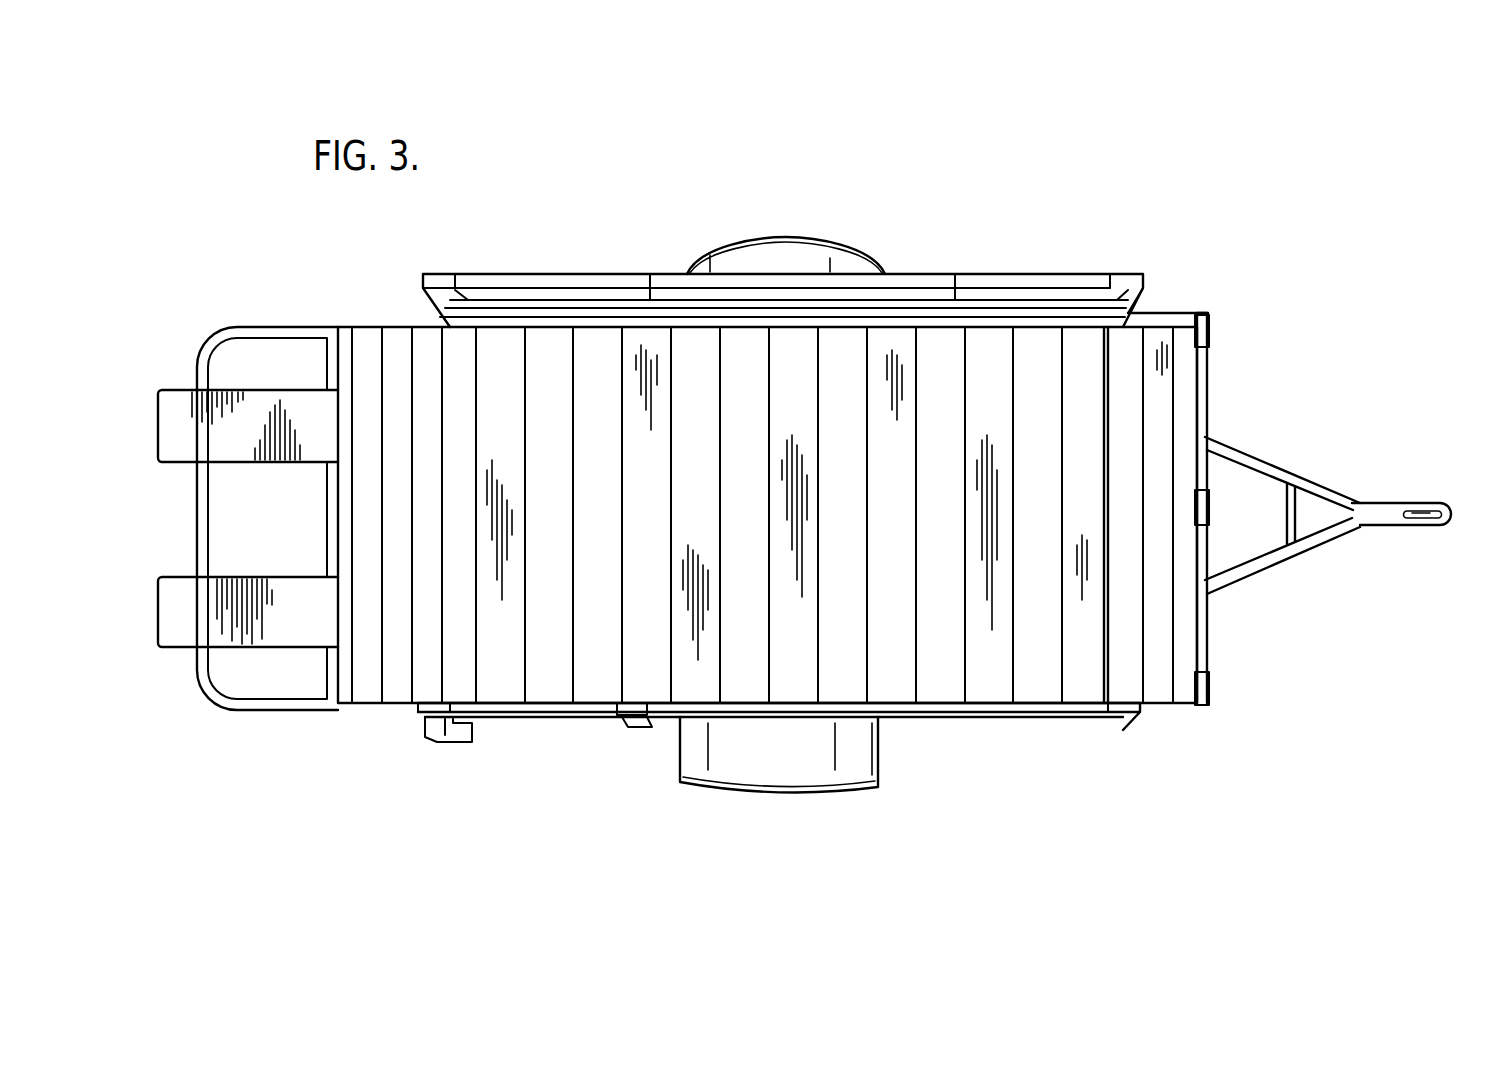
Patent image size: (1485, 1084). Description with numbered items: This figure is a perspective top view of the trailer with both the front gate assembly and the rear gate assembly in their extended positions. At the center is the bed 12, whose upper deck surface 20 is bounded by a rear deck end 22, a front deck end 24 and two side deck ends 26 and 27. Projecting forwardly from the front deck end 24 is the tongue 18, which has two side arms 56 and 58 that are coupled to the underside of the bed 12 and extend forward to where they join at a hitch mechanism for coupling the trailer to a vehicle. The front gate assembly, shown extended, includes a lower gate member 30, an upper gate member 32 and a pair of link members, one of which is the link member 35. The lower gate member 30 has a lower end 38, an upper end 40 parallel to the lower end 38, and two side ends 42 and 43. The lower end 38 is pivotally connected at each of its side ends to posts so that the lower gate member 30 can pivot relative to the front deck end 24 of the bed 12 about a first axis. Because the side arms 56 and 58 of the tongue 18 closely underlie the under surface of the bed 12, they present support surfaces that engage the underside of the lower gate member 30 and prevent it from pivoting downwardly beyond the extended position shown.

The bed 12 is at (598, 377).
The tongue 18 is at (1328, 533).
The upper deck surface 20 is at (661, 491).
The rear deck end 22 is at (483, 446).
The front deck end 24 is at (1103, 399).
The side deck end 26 is at (737, 700).
The side deck end 27 is at (778, 330).
The lower gate member 30 is at (1158, 432).
The upper gate member 32 is at (1208, 435).
The link member 35 is at (1183, 313).
The lower end 38 is at (1103, 485).
The upper end 40 is at (1190, 470).
The side end 42 is at (1162, 712).
The side end 43 is at (1157, 313).
The side arm 56 is at (1250, 578).
The side arm 58 is at (1283, 473).